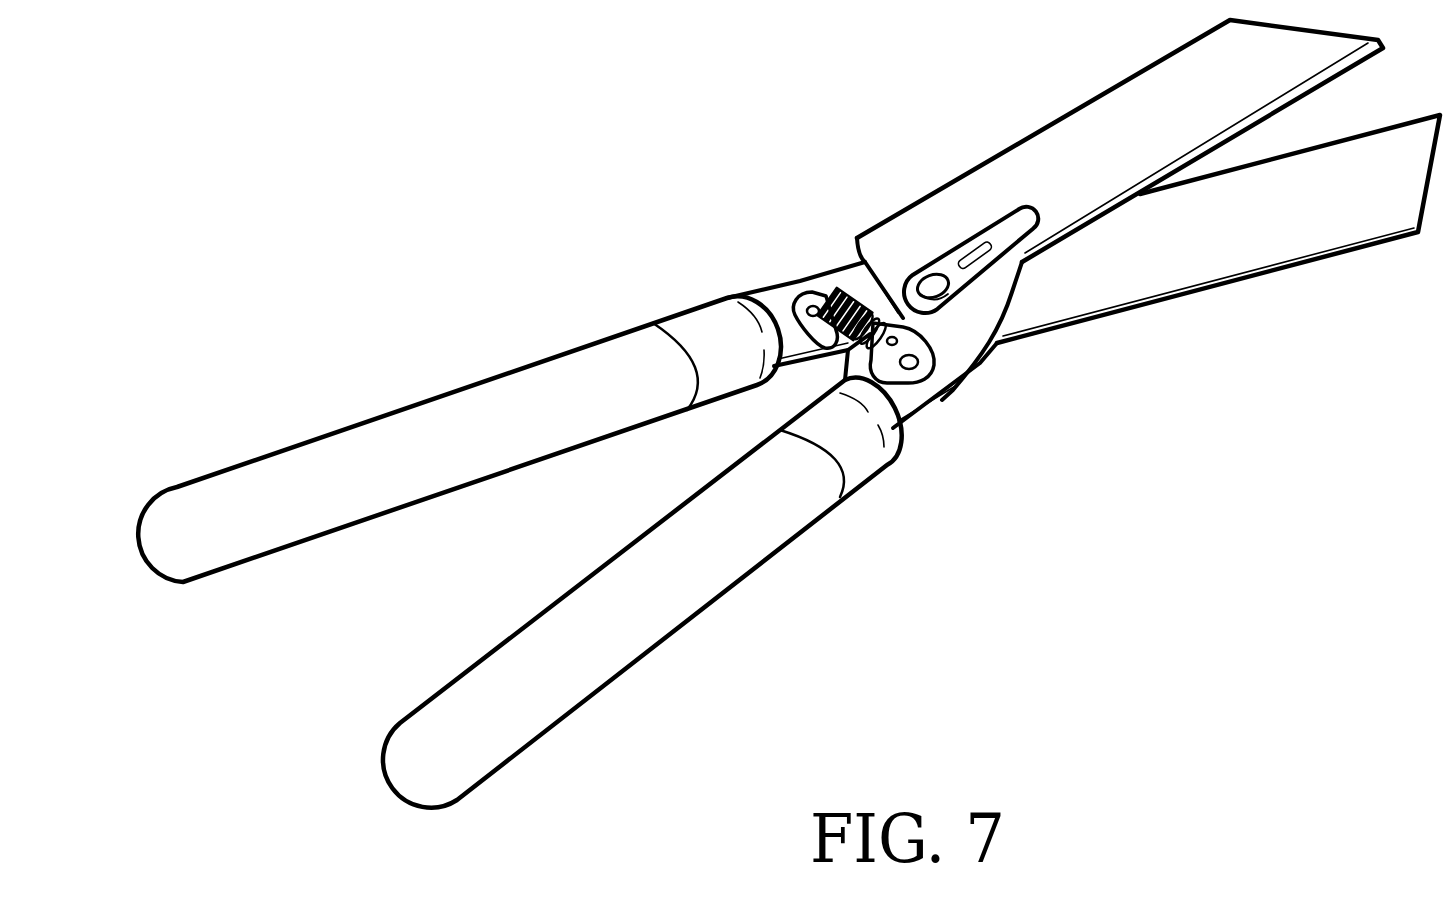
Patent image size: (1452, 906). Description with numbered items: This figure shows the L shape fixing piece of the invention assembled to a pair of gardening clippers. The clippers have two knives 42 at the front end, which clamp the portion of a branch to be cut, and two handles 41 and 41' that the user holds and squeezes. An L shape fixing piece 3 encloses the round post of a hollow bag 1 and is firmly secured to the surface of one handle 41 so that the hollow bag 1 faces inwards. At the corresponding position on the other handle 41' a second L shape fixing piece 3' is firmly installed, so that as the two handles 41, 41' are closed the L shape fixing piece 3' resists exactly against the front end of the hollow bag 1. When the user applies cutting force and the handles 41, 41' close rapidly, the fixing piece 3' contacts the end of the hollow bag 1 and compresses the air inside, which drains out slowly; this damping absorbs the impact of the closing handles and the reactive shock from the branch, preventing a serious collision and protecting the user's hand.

The hollow bag 1 is at (848, 288).
The L shape fixing piece 3 is at (789, 267).
The L shape fixing piece 3' is at (950, 406).
The handle 41 is at (504, 414).
The handle 41' is at (690, 575).
The knife 42 is at (1080, 130).